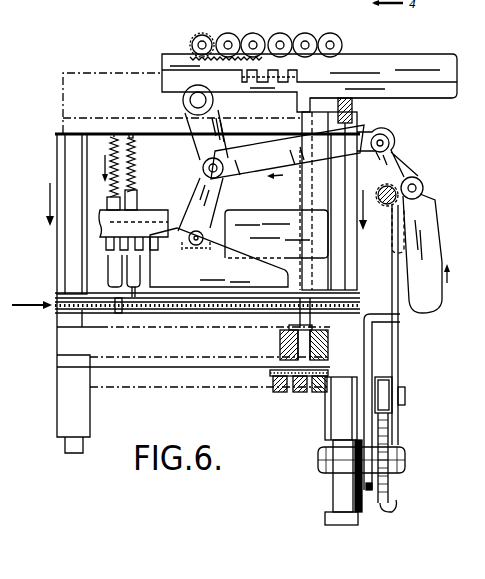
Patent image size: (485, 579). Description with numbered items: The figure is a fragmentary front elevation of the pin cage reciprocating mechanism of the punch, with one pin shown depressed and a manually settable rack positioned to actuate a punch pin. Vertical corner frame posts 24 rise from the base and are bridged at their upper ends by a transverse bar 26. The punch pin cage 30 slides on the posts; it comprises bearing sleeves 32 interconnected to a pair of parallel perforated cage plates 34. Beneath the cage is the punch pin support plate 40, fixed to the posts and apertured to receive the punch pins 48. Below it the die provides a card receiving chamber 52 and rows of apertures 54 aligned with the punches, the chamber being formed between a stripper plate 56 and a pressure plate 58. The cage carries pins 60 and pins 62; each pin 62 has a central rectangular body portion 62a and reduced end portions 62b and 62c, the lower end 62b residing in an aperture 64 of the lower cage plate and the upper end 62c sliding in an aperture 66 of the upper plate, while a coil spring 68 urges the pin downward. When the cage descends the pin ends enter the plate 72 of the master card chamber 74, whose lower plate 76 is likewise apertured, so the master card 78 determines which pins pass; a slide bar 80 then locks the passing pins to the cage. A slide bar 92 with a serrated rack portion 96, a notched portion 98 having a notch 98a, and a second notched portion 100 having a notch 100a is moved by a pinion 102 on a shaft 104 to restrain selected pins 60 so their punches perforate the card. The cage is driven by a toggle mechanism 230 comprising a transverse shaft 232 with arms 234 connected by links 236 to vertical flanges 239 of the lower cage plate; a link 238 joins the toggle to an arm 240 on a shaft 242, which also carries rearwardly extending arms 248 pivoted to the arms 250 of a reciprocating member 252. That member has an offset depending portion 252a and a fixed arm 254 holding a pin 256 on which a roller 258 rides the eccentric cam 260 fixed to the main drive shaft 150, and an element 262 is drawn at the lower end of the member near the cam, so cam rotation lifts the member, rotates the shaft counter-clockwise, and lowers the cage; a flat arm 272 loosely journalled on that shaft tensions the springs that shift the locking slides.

The corner frame post 24 is at (63, 448).
The transverse bar 26 is at (89, 80).
The punch pin cage 30 is at (53, 245).
The bearing sleeve 32 is at (64, 164).
The perforated cage plate 34 is at (58, 133).
The punch pin support plate 40 is at (364, 316).
The punch pin 48 is at (288, 329).
The card receiving chamber 52 is at (320, 394).
The die aperture 54 is at (300, 394).
The stripper plate 56 is at (272, 372).
The pressure plate 58 is at (281, 394).
The pin 60 is at (313, 230).
The pin 62 is at (144, 199).
The central rectangular body portion 62a is at (112, 280).
The reduced end portion 62b is at (122, 312).
The reduced end portion 62c is at (131, 133).
The aperture 64 is at (136, 292).
The aperture 66 is at (112, 134).
The coil spring 68 is at (137, 185).
The plate 72 is at (55, 296).
The master card chamber 74 is at (243, 313).
The lower plate 76 is at (211, 312).
The master card 78 is at (177, 312).
The slide bar 80 is at (285, 215).
The slide bar 92 is at (446, 54).
The serrated rack portion 96 is at (262, 58).
The notched portion 98 is at (358, 72).
The notch 98a is at (240, 79).
The second notched portion 100 is at (405, 92).
The notch 100a is at (332, 111).
The pinion 102 is at (266, 36).
The shaft 104 is at (196, 44).
The main drive shaft 150 is at (405, 458).
The toggle mechanism 230 is at (236, 120).
The transverse shaft 232 is at (196, 100).
The arm 234 is at (204, 144).
The link 236 is at (221, 202).
The link 238 is at (270, 153).
The vertical flange 239 is at (219, 257).
The arm 240 is at (391, 149).
The shaft 242 is at (409, 177).
The rearwardly extending arm 248 is at (430, 204).
The arm 250 is at (432, 236).
The reciprocating member 252 is at (374, 505).
The offset depending portion 252a is at (373, 346).
The fixed arm 254 is at (400, 362).
The pin 256 is at (406, 398).
The roller 258 is at (393, 385).
The eccentric cam 260 is at (389, 437).
The hook 262 is at (388, 506).
The flat arm 272 is at (391, 233).